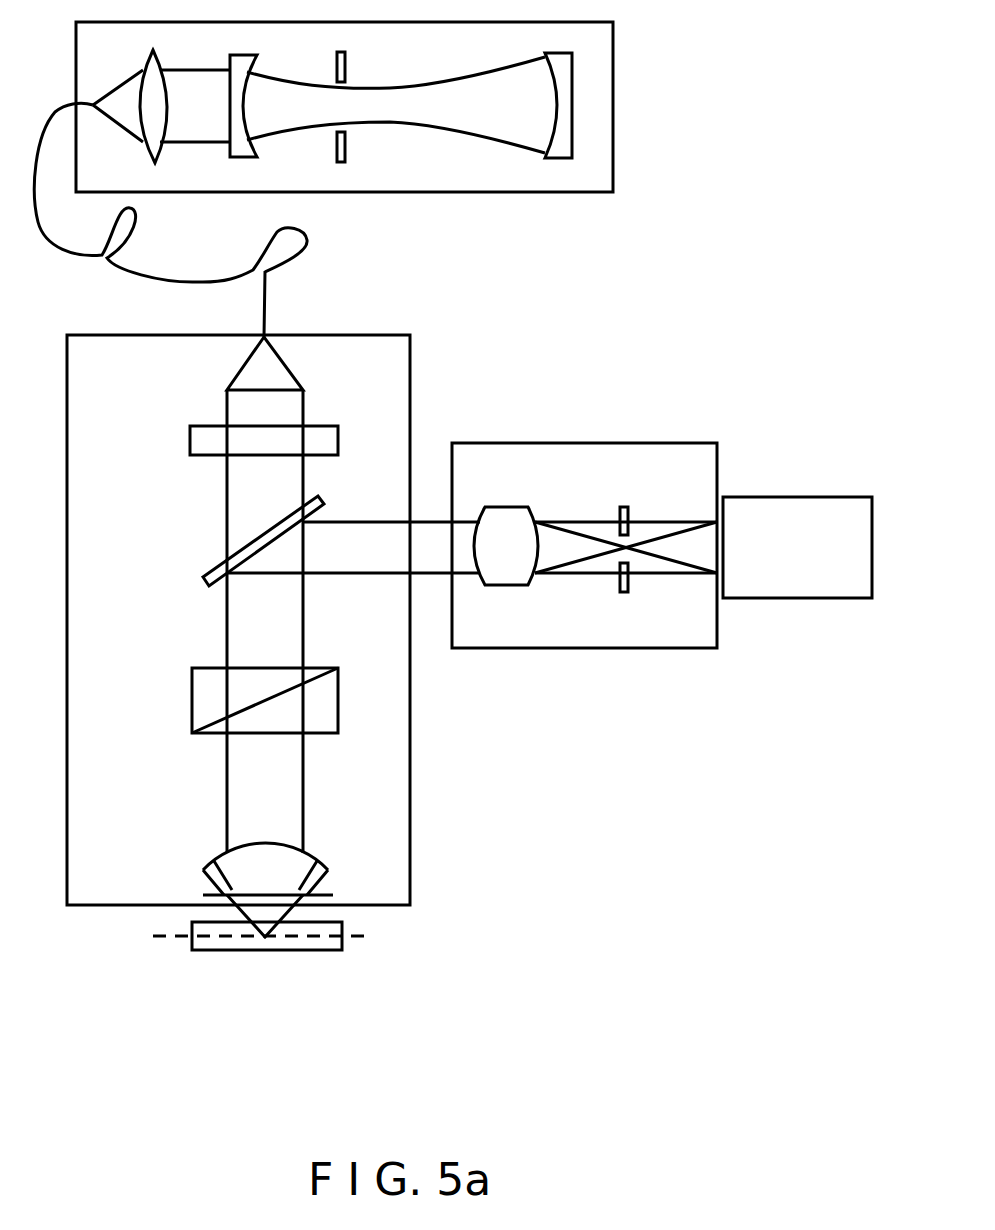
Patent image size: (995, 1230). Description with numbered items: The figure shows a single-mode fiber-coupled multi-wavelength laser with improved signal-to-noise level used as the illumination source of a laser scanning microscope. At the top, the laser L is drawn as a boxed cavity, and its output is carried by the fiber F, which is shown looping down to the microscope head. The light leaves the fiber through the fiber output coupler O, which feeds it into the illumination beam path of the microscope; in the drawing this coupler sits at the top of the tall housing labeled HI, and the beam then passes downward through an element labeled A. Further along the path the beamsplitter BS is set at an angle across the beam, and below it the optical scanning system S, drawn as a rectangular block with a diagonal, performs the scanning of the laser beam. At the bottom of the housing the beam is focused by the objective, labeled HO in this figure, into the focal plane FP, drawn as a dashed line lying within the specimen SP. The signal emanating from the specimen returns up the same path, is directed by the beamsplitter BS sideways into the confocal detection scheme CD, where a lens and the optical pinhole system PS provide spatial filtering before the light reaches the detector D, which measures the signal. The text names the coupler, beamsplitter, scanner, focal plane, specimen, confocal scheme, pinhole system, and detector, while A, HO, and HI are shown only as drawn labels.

The laser L is at (368, 107).
The fiber F is at (170, 220).
The fiber output coupler O is at (242, 363).
The aperture A is at (239, 441).
The beamsplitter BS is at (296, 550).
The optical scanning system S is at (240, 700).
The objective lens HO is at (225, 890).
The optical head / interferometer housing HI is at (270, 620).
The focal plane FP is at (232, 933).
The specimen SP is at (267, 964).
The confocal detection scheme CD is at (584, 523).
The optical pinhole system PS is at (616, 573).
The detector D is at (824, 547).